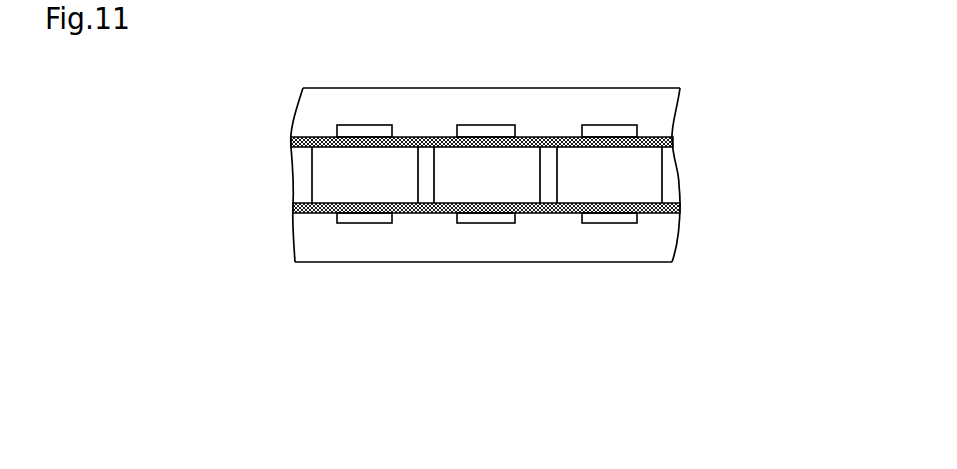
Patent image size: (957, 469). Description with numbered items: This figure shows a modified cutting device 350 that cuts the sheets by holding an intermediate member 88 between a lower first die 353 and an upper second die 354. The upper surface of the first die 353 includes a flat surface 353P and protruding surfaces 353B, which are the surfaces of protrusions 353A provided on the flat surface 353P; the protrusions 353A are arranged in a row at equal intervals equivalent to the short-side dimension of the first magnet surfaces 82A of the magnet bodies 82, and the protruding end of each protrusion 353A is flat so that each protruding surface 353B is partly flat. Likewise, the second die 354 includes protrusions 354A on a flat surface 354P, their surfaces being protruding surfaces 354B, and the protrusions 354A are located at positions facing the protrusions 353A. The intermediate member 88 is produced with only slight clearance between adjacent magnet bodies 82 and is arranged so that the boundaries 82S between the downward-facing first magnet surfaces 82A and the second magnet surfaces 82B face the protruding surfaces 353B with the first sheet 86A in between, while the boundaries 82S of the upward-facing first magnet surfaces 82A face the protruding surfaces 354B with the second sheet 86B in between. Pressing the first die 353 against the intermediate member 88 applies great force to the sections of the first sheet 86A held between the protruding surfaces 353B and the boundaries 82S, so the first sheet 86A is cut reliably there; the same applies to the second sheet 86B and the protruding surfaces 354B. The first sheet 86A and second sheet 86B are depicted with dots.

The cutting device 350 is at (724, 76).
The second die 354 is at (642, 97).
The first die 353 is at (650, 256).
The protrusions 354A is at (315, 131).
The protruding surfaces 354B is at (398, 148).
The flat surface 354P is at (337, 131).
The protrusions 353A is at (305, 218).
The protruding surfaces 353B is at (520, 200).
The flat surface 353P is at (337, 225).
The first sheet 86A is at (682, 209).
The second sheet 86B is at (672, 141).
The magnet bodies 82 is at (303, 193).
The first magnet surfaces 82A is at (361, 131).
The second magnet surfaces 82B is at (422, 172).
The boundaries 82S is at (423, 137).
The intermediate member 88 is at (277, 171).